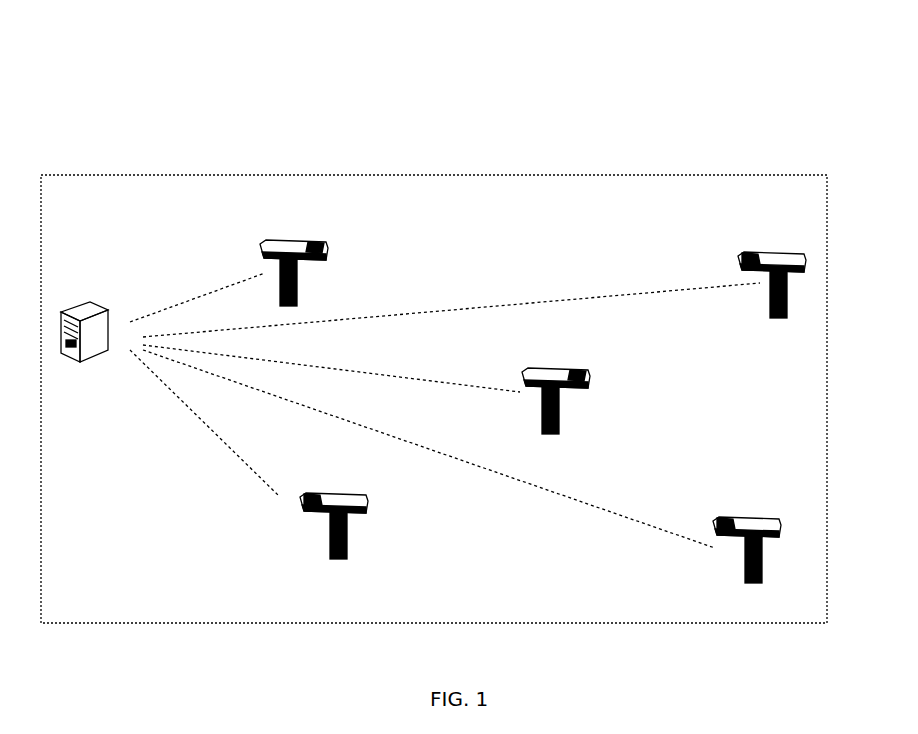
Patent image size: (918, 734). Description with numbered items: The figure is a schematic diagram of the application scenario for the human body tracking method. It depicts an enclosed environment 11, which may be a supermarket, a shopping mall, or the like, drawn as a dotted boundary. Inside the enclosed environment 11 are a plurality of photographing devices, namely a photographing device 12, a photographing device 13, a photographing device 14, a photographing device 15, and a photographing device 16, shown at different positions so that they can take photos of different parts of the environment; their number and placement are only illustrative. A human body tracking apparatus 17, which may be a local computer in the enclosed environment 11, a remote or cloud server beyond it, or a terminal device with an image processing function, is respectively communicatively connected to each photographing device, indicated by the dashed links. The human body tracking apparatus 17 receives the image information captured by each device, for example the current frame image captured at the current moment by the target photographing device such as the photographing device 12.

The enclosed environment 11 is at (650, 175).
The photographing device 12 is at (806, 258).
The photographing device 13 is at (782, 526).
The photographing device 14 is at (576, 393).
The photographing device 15 is at (332, 540).
The photographing device 16 is at (303, 236).
The human body tracking apparatus 17 is at (92, 300).